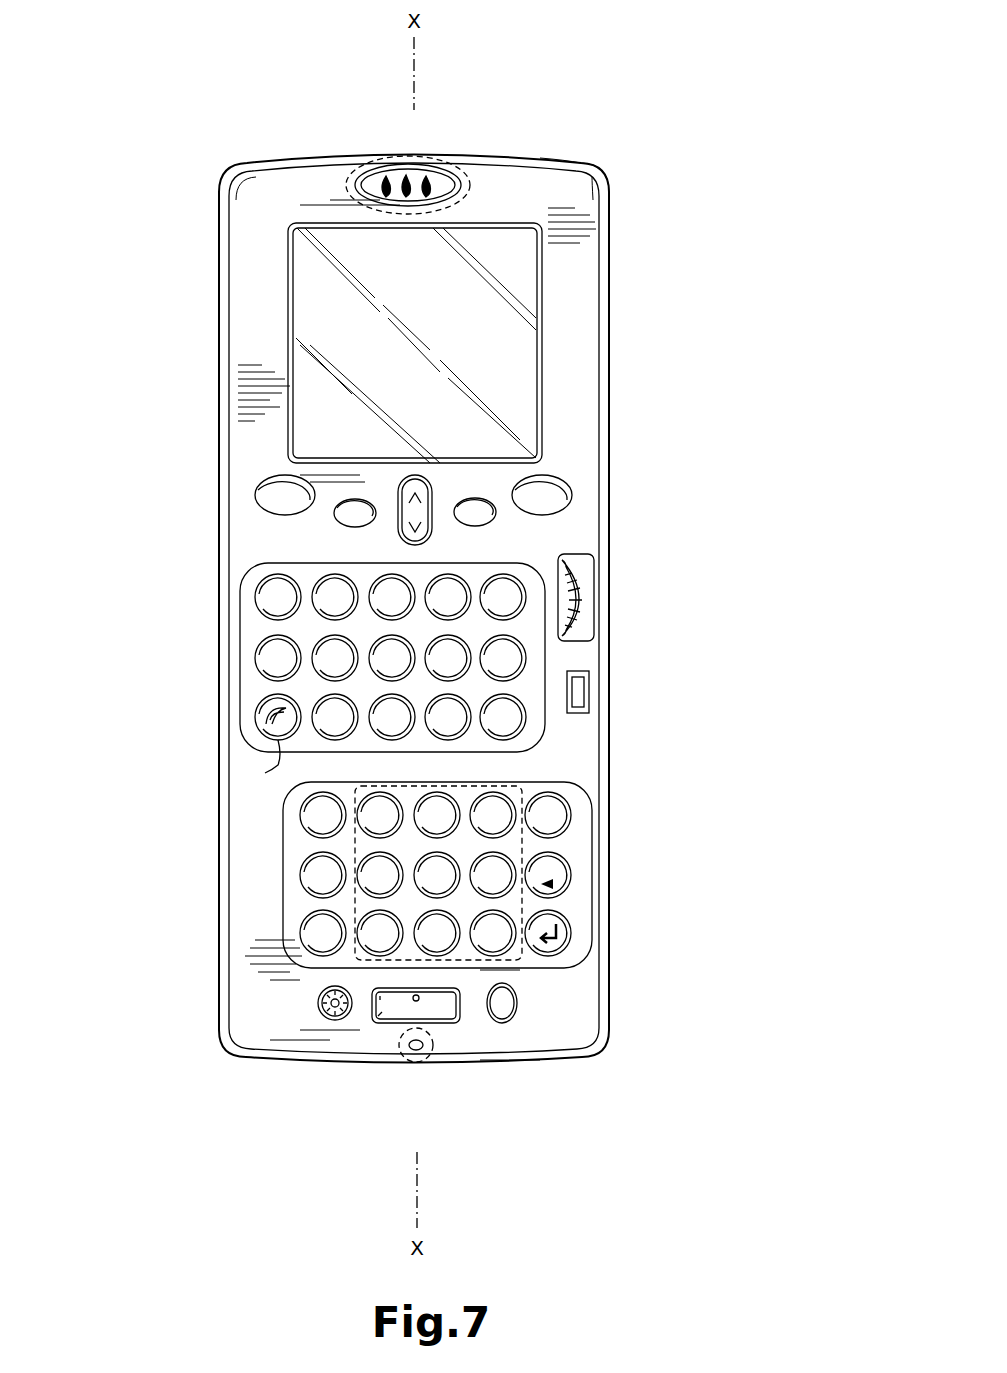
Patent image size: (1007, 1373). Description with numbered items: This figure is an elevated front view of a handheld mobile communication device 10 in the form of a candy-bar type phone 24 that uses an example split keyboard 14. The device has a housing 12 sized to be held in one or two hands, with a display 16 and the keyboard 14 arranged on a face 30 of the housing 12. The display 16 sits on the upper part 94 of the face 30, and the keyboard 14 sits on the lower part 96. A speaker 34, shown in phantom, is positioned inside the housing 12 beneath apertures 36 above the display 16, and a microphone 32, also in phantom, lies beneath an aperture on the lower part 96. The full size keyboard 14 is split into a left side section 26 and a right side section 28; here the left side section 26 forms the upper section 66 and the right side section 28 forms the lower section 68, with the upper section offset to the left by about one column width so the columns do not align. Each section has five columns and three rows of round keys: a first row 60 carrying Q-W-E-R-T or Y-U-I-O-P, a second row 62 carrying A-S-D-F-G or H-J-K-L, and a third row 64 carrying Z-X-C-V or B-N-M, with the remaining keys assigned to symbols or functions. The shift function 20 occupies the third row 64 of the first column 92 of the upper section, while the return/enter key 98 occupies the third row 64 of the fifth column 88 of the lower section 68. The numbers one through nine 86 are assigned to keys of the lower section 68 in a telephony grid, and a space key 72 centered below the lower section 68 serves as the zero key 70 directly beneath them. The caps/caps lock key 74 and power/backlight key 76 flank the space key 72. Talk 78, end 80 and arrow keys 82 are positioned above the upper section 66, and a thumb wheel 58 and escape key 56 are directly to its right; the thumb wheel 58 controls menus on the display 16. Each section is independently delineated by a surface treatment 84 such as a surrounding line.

The mobile communication device 10 is at (670, 85).
The housing 12 is at (614, 345).
The keyboard 14 is at (426, 745).
The display 16 is at (520, 330).
The shift function 20 is at (270, 716).
The candy-bar type phone 24 is at (625, 188).
The left side section 26 is at (424, 783).
The right side section 28 is at (576, 897).
The face 30 is at (426, 873).
The microphone 32 is at (417, 1062).
The speaker 34 is at (458, 167).
The apertures 36 is at (405, 173).
The escape key 56 is at (580, 688).
The thumb wheel 58 is at (587, 606).
The first row 60 is at (258, 600).
The second row 62 is at (258, 658).
The third row 64 is at (238, 837).
The upper section 66 is at (424, 737).
The lower section 68 is at (426, 894).
The 0 key 70 is at (453, 1020).
The space key 72 is at (372, 1010).
The caps/caps lock key 74 is at (517, 1005).
The power/backlight key 76 is at (325, 1012).
The talk key 78 is at (262, 480).
The end key 80 is at (550, 490).
The arrow keys 82 is at (485, 503).
The surface treatment 84 is at (444, 785).
The numbers 1-9 86 is at (573, 830).
The fifth column 88 is at (540, 707).
The first column 92 is at (258, 764).
The upper part 94 is at (250, 340).
The lower part 96 is at (240, 830).
The return/enter key 98 is at (560, 927).